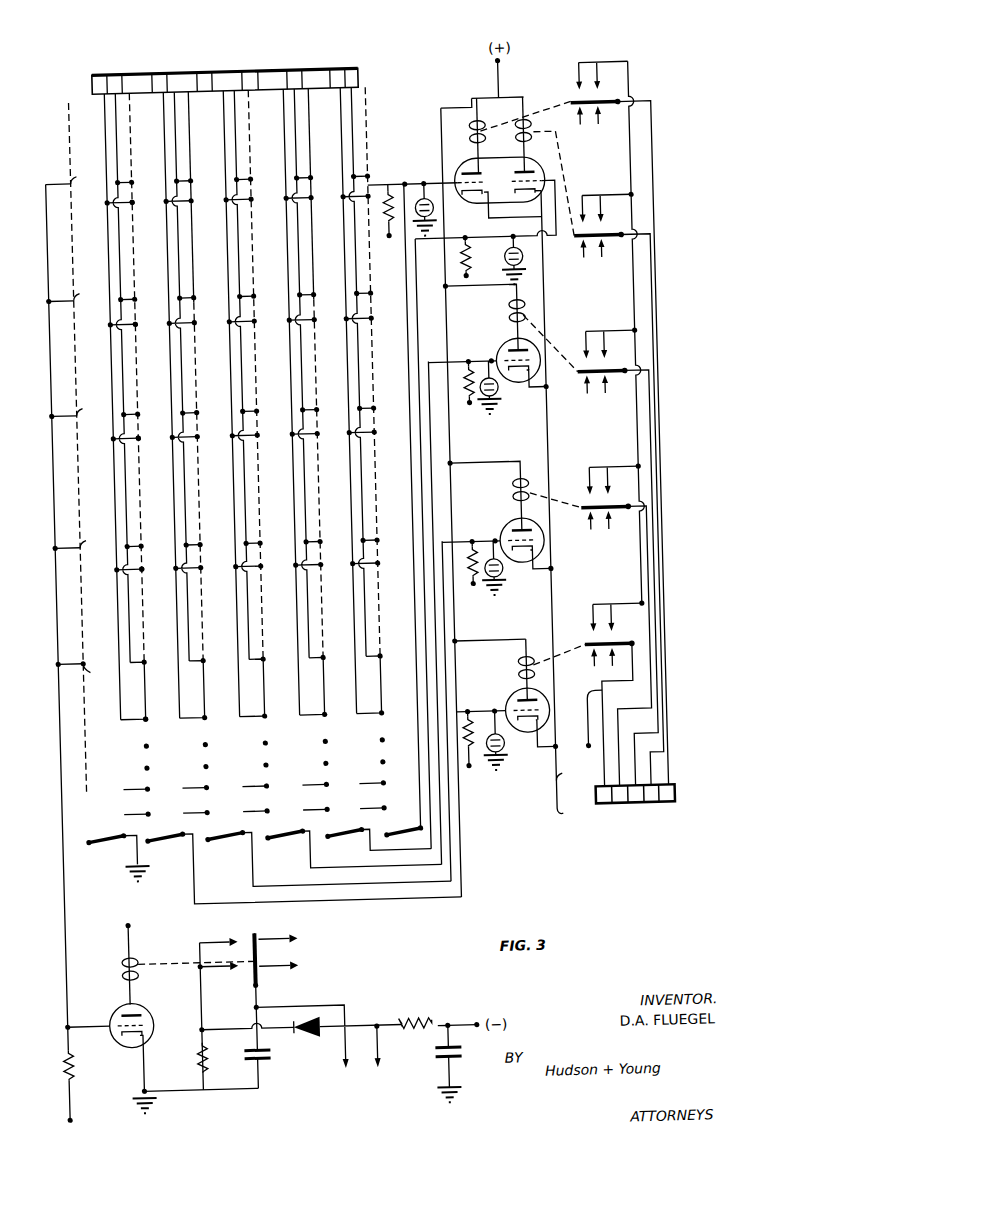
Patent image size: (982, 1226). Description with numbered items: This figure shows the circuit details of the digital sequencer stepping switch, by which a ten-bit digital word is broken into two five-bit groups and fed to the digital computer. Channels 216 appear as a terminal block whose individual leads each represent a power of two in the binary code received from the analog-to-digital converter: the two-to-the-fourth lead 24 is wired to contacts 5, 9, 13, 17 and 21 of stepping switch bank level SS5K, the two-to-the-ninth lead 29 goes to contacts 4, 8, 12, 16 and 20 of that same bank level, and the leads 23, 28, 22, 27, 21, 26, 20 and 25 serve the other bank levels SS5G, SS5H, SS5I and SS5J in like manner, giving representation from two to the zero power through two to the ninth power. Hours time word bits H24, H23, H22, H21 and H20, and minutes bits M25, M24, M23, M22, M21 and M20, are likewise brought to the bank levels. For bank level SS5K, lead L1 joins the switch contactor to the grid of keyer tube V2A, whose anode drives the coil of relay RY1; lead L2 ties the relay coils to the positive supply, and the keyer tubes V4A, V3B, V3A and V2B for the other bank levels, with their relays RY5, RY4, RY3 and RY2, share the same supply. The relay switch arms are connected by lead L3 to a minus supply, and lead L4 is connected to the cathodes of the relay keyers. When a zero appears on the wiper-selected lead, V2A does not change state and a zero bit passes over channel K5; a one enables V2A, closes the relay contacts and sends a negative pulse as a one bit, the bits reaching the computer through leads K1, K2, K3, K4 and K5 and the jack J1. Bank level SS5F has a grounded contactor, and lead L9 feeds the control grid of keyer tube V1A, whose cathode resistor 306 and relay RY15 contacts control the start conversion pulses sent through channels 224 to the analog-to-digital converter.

The channels 216 is at (370, 76).
The 2^4 lead 24 is at (113, 98).
The 2^9 lead 29 is at (132, 99).
The 2^3 lead 23 is at (173, 142).
The 2^8 lead 28 is at (175, 111).
The 2^2 lead 22 is at (232, 152).
The 2^7 lead 27 is at (240, 106).
The 2^1 lead 21 is at (289, 129).
The 2^6 lead 26 is at (304, 114).
The 2^0 lead 20 is at (140, 658).
The 2^5 lead 25 is at (370, 78).
The contact 4 is at (140, 178).
The contact 5 is at (140, 198).
The contact 8 is at (140, 295).
The contact 9 is at (143, 320).
The contact 12 is at (140, 410).
The contact 13 is at (143, 434).
The contact 16 is at (140, 542).
The contact 17 is at (143, 565).
The resistor 306 is at (50, 1060).
The channels 224 is at (347, 1062).
The relay RY5 is at (483, 128).
The relay RY4 is at (537, 121).
The relay RY3 is at (512, 315).
The relay RY2 is at (516, 495).
The relay RY1 is at (519, 671).
The relay RY15 is at (124, 952).
The keyer tube V4A is at (464, 166).
The keyer tube V3B is at (554, 165).
The keyer tube V3A is at (507, 349).
The keyer tube V2B is at (510, 528).
The keyer tube V2A is at (507, 700).
The keyer tube V1A is at (116, 1042).
The lead L1 is at (347, 902).
The lead L2 is at (502, 645).
The lead L3 is at (579, 715).
The lead L4 is at (561, 502).
The lead L9 is at (54, 925).
The jack J1 is at (585, 812).
The lead K1 is at (667, 811).
The lead K2 is at (656, 811).
The lead K3 is at (629, 811).
The lead K4 is at (614, 811).
The channel K5 is at (596, 811).
The stepping switch bank level SS5F is at (114, 841).
The stepping switch bank level SS5K is at (166, 842).
The stepping switch bank level SS5J is at (211, 843).
The stepping switch bank level SS5I is at (272, 836).
The stepping switch bank level SS5H is at (334, 840).
The stepping switch bank level SS5G is at (390, 841).
The hours time word bit H2^4 H24 is at (359, 744).
The hours time word bit H2^3 H23 is at (130, 784).
The hours time word bit H2^2 H22 is at (190, 784).
The hours time word bit H2^1 H21 is at (250, 784).
The hours time word bit H2^0 H20 is at (310, 784).
The contact M25 is at (367, 787).
The contact M24 is at (124, 810).
The contact M23 is at (184, 810).
The contact M22 is at (244, 810).
The contact M21 is at (304, 810).
The contact M20 is at (361, 806).